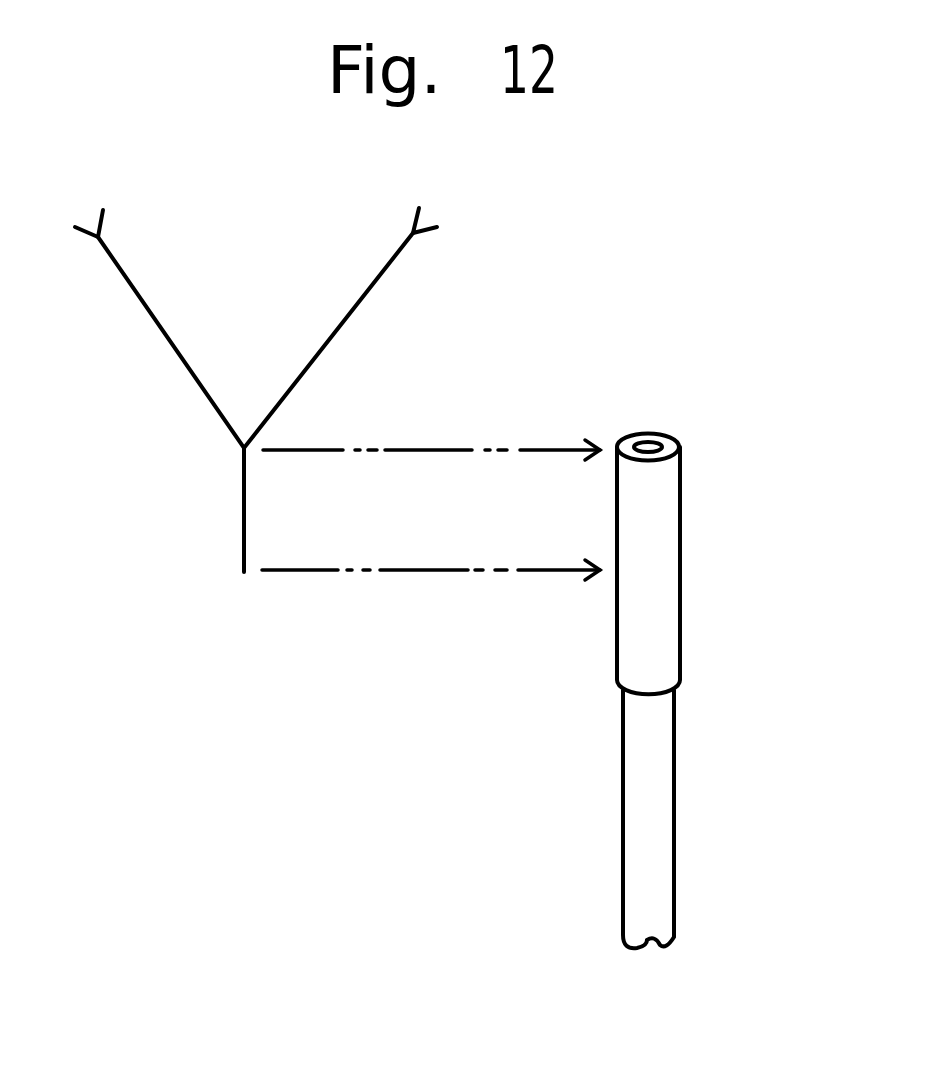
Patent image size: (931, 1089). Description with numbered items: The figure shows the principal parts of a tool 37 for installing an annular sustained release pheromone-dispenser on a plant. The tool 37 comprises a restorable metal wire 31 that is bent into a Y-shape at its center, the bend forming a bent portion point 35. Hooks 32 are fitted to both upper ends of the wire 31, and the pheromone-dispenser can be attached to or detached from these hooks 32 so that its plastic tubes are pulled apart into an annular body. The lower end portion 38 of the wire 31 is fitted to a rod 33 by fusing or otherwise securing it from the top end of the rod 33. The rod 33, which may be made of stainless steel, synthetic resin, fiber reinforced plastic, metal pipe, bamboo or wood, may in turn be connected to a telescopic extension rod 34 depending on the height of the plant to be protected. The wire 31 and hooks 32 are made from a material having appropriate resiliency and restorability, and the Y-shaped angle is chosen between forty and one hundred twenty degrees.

The wire 31 is at (327, 325).
The hooks 32 is at (402, 218).
The rod 33 is at (660, 608).
The telescopic extension rod 34 is at (655, 842).
The bent portion point 35 is at (235, 452).
The tool 37 is at (400, 955).
The lower end portion 38 is at (242, 525).